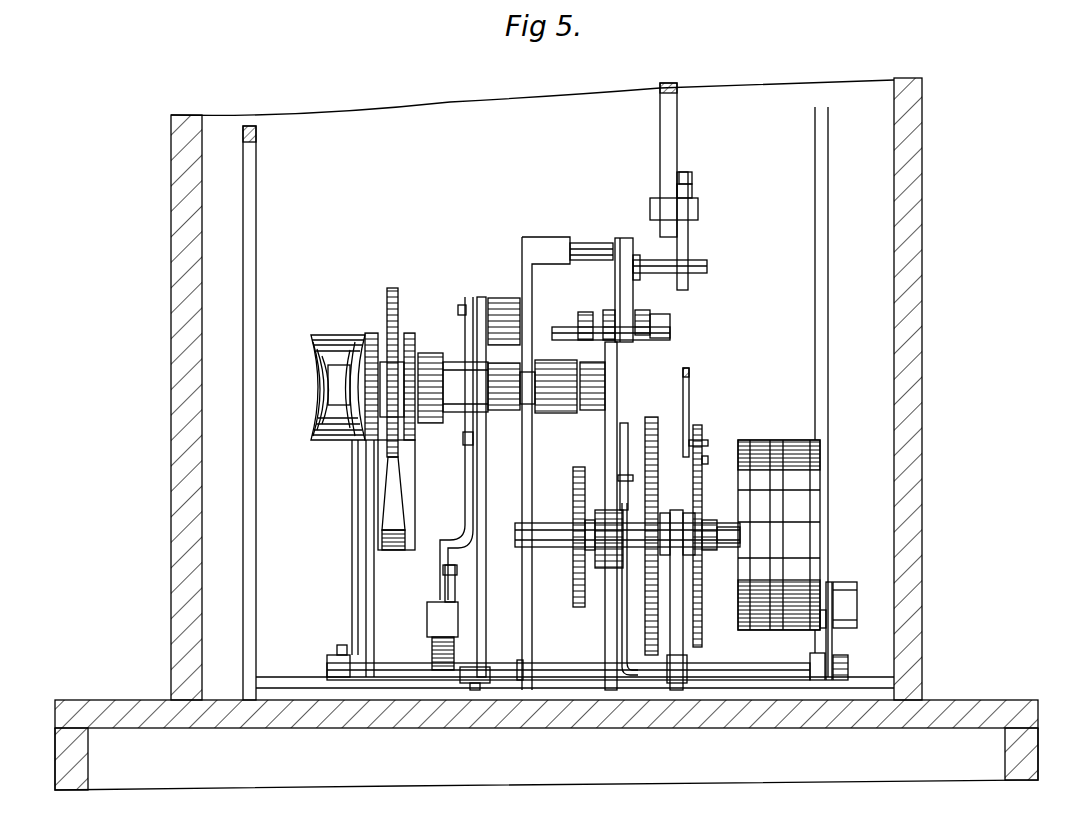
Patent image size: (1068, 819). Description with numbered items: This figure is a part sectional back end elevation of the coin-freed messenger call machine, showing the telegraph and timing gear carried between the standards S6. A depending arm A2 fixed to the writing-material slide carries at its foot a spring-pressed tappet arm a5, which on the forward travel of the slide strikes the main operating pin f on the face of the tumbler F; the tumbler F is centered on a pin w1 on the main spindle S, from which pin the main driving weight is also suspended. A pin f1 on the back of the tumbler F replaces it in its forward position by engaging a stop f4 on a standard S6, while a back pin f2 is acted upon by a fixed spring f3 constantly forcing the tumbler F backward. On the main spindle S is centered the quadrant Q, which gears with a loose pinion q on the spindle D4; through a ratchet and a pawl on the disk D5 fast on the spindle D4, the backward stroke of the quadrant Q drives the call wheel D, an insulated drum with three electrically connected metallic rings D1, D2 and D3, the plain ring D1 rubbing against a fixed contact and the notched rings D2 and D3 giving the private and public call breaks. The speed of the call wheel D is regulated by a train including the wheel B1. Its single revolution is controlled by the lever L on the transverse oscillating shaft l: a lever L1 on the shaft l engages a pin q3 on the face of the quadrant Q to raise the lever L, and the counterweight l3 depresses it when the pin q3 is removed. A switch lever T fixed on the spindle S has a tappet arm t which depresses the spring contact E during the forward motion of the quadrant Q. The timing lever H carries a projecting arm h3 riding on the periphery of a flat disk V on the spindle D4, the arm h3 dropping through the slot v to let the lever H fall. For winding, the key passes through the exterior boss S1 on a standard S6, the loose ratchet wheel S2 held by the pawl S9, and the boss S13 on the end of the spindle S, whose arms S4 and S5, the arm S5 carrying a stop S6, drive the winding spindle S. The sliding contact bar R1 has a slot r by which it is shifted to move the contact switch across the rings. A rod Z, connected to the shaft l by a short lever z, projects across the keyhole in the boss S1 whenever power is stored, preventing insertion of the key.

The depending arm A2 is at (668, 157).
The spring-pressed tappet arm a5 is at (688, 260).
The main operating pin f is at (707, 267).
The back pin f1 is at (590, 243).
The back pin f2 is at (560, 329).
The fixed spring f3 is at (600, 312).
The stop f4 is at (555, 264).
The tumbler F is at (633, 296).
The pin w1 is at (668, 324).
The timing lever H is at (680, 400).
The exterior boss S1 is at (312, 385).
The loose ratchet wheel S2 is at (395, 282).
The pawl S9 is at (388, 445).
The rod Z is at (349, 558).
The boss S13 is at (468, 420).
The laterally projecting arm S4 is at (465, 340).
The standard S6 is at (459, 306).
The switch lever T is at (492, 487).
The laterally projecting arm S5 is at (496, 298).
The main spindle S is at (565, 413).
The quadrant Q is at (607, 445).
The wheel B1 is at (651, 418).
The pin q3 is at (628, 472).
The projecting arm h3 is at (694, 425).
The slot v is at (702, 462).
The flat disk V is at (677, 580).
The loose pinion q is at (614, 568).
The disk D5 is at (578, 605).
The lever L1 is at (622, 600).
The spindle D4 is at (725, 526).
The call wheel D is at (800, 522).
The plain ring D1 is at (815, 506).
The private call ring D2 is at (752, 440).
The public call ring D3 is at (784, 440).
The oscillating shaft l is at (326, 670).
The short lever z is at (338, 650).
The tappet arm t is at (444, 584).
The spring contact E is at (442, 636).
The sliding contact bar R1 is at (486, 677).
The slot r is at (479, 693).
The counterweight l3 is at (848, 610).
The lever L is at (833, 645).